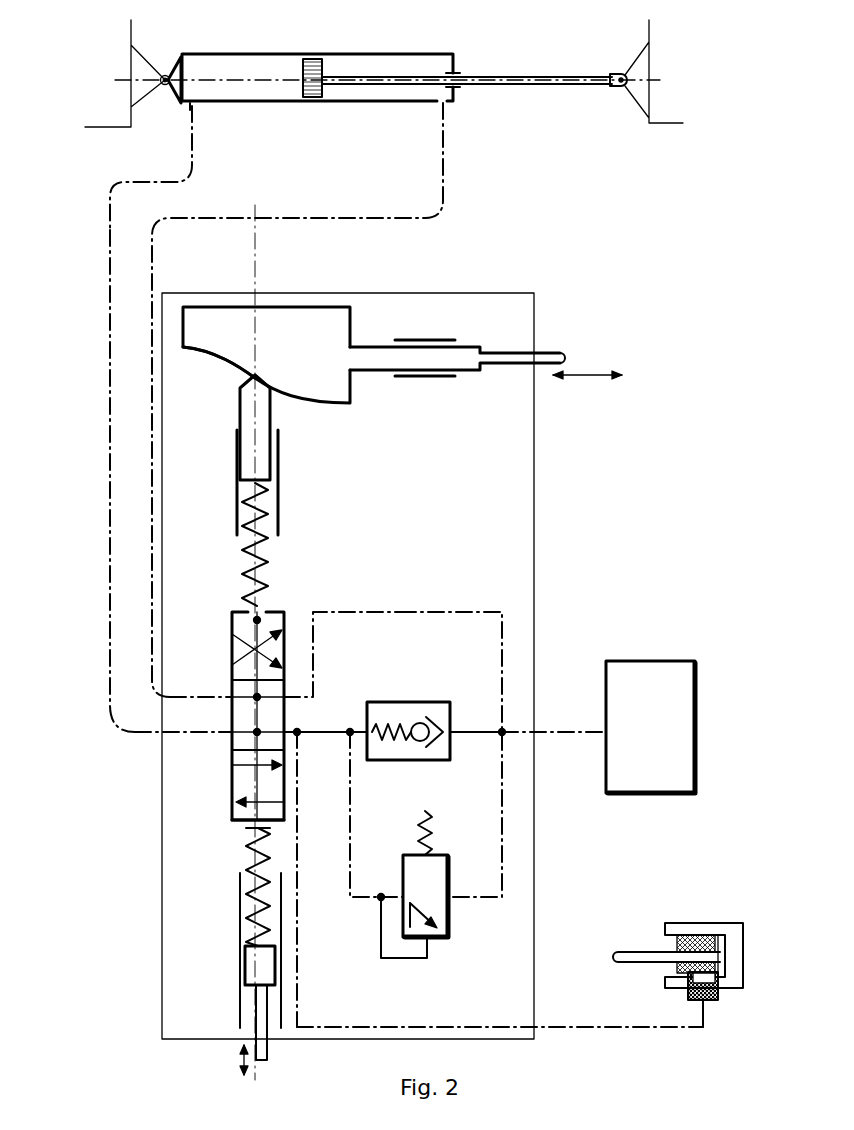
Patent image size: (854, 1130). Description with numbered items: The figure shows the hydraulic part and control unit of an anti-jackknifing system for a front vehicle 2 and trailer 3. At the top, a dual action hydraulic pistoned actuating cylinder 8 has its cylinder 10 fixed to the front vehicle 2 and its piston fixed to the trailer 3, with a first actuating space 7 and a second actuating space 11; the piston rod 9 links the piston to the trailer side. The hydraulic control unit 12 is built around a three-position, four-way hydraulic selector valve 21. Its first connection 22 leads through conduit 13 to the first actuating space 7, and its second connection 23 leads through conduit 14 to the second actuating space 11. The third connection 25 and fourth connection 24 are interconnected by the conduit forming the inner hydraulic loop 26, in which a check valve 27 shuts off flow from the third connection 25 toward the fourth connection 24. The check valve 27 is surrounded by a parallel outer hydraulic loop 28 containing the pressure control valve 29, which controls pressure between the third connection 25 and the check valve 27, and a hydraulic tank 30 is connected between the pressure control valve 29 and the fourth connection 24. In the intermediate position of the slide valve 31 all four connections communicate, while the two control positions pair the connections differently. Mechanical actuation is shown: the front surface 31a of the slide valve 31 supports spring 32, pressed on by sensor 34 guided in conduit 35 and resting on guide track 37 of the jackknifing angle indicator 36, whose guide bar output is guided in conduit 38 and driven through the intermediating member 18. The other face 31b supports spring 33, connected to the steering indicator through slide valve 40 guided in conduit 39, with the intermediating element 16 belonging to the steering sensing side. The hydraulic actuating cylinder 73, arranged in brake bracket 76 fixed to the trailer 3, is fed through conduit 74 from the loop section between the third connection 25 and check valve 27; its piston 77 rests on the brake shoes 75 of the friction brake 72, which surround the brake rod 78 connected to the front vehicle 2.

The front vehicle 2 is at (128, 33).
The trailer 3 is at (649, 68).
The first actuating space 7 is at (219, 65).
The hydraulic pistoned actuating cylinder 8 is at (193, 52).
The piston rod 9 is at (522, 78).
The cylinder 10 is at (240, 105).
The second actuating space 11 is at (345, 62).
The hydraulic control unit 12 is at (497, 485).
The conduit 13 is at (112, 430).
The conduit 14 is at (150, 483).
The intermediating element 16 is at (256, 1013).
The intermediating member 18 is at (545, 355).
The three-position, four-way hydraulic selector valve 21 is at (232, 818).
The first connection 22 is at (215, 735).
The second connection 23 is at (215, 697).
The fourth connection 24 is at (300, 693).
The third connection 25 is at (305, 732).
The inner hydraulic loop 26 is at (468, 732).
The check valve 27 is at (378, 702).
The outer hydraulic loop 28 is at (503, 890).
The pressure control valve 29 is at (445, 905).
The hydraulic tank 30 is at (645, 675).
The slide valve 31 is at (265, 620).
The front surface 31a is at (270, 604).
The other face 31b is at (270, 833).
The spring 32 is at (268, 552).
The spring 33 is at (270, 880).
The sensor 34 is at (252, 426).
The conduit 35 is at (238, 468).
The jackknifing angle indicator 36 is at (213, 320).
The guide track 37 is at (287, 388).
The conduit 38 is at (425, 338).
The conduit 39 is at (281, 1007).
The slide valve 40 is at (250, 963).
The friction brake 72 is at (720, 930).
The hydraulic actuating cylinder 73 is at (710, 1000).
The conduit 74 is at (620, 1027).
The brake shoe 75 is at (695, 935).
The brake bracket 76 is at (735, 950).
The piston 77 is at (712, 983).
The brake rod 78 is at (630, 952).